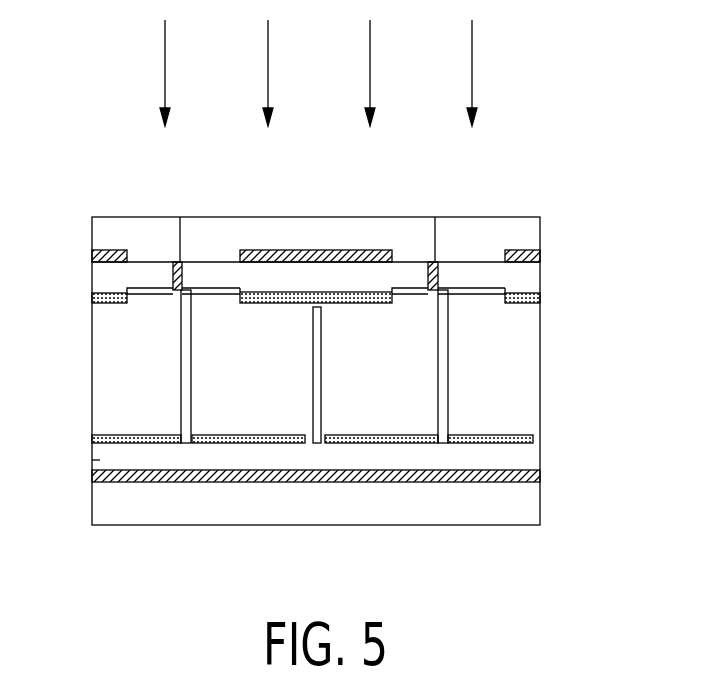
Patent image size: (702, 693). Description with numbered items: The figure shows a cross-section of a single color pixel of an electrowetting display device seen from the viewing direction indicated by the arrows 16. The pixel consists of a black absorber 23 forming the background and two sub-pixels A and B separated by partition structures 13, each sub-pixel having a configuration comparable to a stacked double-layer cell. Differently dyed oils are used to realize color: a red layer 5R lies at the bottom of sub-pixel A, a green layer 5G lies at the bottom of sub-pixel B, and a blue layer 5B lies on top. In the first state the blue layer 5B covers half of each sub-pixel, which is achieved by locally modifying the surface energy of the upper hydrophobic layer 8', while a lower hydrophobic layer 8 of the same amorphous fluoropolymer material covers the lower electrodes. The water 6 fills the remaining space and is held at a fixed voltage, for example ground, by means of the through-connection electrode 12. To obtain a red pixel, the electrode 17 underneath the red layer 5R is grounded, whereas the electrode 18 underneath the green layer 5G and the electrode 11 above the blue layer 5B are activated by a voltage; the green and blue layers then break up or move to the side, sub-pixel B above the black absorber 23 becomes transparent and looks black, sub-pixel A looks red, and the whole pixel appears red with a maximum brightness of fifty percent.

The arrows 16 is at (472, 60).
The partition wall 13 is at (135, 230).
The electrode 12 is at (180, 217).
The layer 8' is at (343, 227).
The second fluid 6 is at (276, 312).
The electrode 11 is at (330, 250).
The blue layer 5B is at (372, 300).
The green layer 5G is at (92, 440).
The red layer 5R is at (253, 443).
The intermediate hydrophobic layer 8 is at (113, 523).
The electrode 17 is at (205, 475).
The electrode 18 is at (355, 475).
The black absorber 23 is at (487, 508).